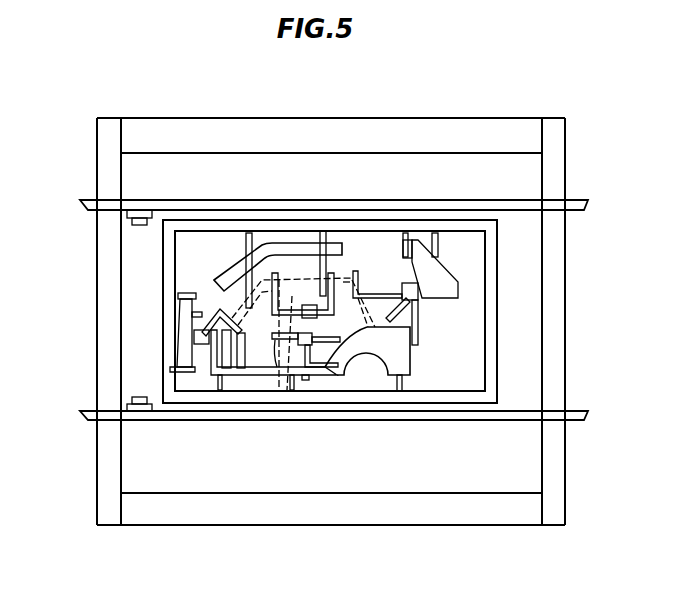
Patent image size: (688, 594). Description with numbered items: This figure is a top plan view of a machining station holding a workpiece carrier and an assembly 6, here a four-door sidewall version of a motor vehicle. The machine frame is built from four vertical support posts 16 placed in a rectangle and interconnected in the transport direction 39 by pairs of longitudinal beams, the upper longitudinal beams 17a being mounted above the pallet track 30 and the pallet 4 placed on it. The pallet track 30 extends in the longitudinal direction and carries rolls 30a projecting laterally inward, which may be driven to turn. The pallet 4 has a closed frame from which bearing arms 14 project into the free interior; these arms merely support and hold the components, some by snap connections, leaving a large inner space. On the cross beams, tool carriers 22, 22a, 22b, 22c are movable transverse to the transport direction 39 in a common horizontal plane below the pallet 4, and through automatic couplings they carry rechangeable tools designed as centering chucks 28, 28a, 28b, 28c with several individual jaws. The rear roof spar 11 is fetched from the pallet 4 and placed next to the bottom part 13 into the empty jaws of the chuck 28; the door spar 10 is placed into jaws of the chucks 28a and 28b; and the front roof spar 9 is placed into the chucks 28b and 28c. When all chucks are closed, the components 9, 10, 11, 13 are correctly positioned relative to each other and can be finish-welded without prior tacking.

The pallet 4 is at (168, 287).
The assembly 6 is at (428, 368).
The front roof spar 9 is at (287, 243).
The door spar 10 is at (182, 355).
The rear roof spar 11 is at (442, 280).
The bottom part 13 is at (408, 373).
The bearing arms 14 is at (247, 235).
The vertical support posts 16 is at (558, 457).
The upper longitudinal beams 17a is at (512, 508).
The tool carrier 22 is at (420, 299).
The tool carrier 22a is at (316, 320).
The tool carrier 22b is at (313, 346).
The tool carrier 22c is at (203, 346).
The chuck 28 is at (356, 272).
The chuck 28a is at (292, 376).
The chuck 28b is at (274, 270).
The chuck 28c is at (240, 335).
The pallet track 30 is at (580, 200).
The rolls 30a is at (142, 225).
The transport direction 39 is at (452, 181).